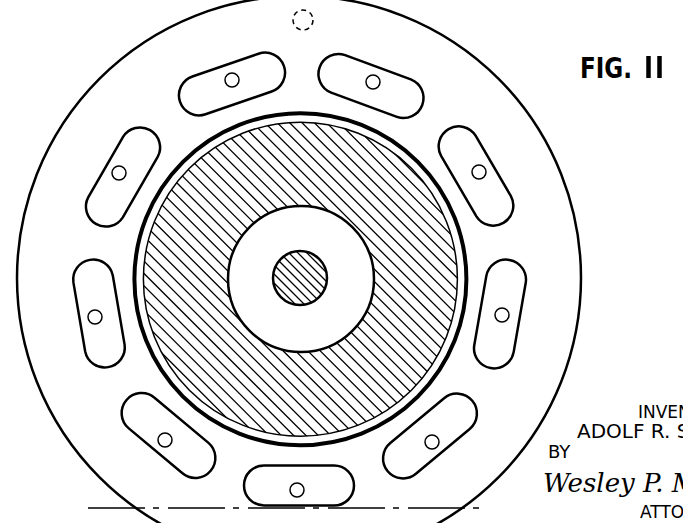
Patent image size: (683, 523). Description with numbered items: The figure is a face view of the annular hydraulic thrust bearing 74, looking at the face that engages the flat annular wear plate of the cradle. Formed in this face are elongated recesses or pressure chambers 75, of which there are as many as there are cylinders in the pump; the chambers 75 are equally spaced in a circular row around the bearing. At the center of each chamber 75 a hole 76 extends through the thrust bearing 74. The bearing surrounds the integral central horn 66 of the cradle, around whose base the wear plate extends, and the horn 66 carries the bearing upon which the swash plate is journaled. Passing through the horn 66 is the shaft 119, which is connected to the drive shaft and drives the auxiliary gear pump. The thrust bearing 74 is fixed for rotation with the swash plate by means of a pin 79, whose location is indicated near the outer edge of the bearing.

The thrust bearing 74 is at (68, 402).
The pressure chambers 75 is at (201, 86).
The hole 76 is at (231, 73).
The pin 79 is at (288, 20).
The horn 66 is at (340, 360).
The shaft 119 is at (315, 262).